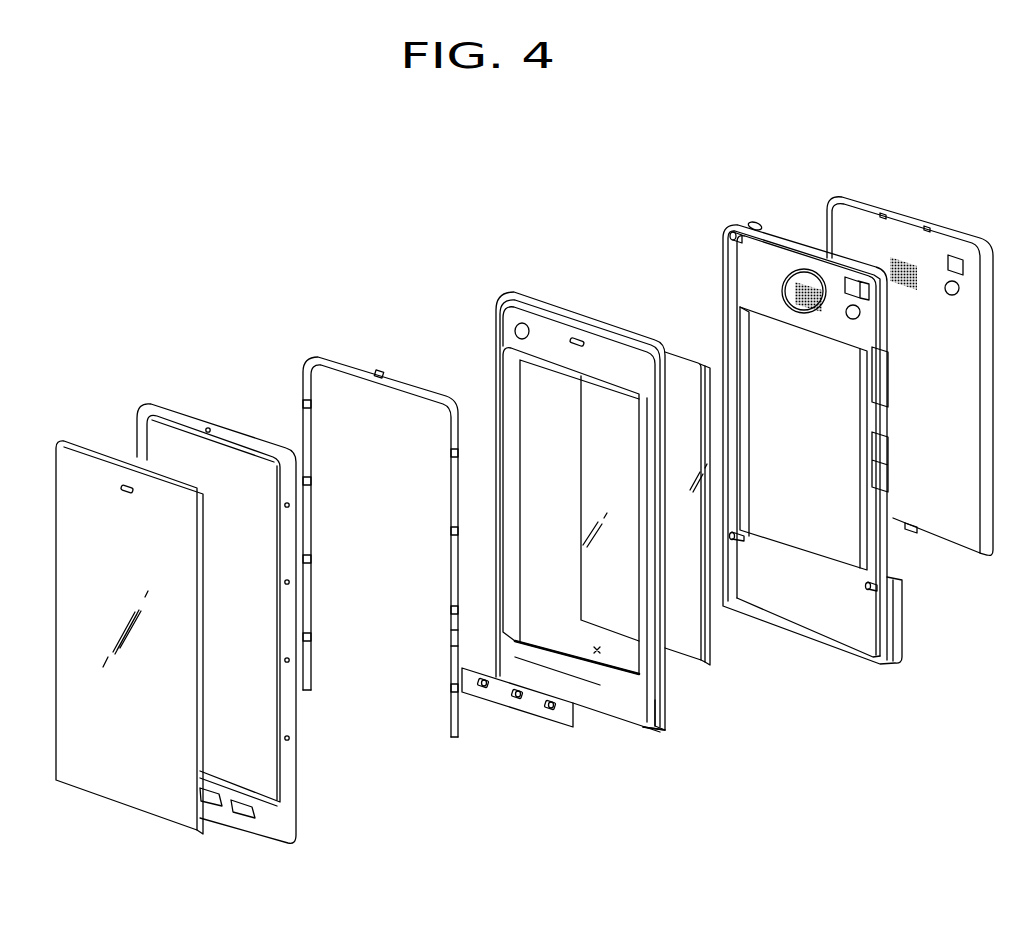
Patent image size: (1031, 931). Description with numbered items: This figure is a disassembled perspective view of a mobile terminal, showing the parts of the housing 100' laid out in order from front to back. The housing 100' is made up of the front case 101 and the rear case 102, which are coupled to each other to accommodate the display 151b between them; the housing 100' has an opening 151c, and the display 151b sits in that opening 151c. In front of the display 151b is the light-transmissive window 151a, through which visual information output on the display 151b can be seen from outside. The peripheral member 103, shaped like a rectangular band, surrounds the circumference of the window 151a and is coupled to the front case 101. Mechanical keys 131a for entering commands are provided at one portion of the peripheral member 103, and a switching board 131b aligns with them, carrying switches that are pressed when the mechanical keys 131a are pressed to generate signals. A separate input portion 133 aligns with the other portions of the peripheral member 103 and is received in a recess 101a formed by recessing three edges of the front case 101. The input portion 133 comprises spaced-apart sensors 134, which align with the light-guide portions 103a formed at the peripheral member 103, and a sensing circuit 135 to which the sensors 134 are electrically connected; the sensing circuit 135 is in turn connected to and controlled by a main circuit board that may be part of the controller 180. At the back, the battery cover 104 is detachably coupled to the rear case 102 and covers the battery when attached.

The housing 100' is at (634, 175).
The window 151a is at (93, 432).
The peripheral member 103 is at (169, 392).
The mechanical keys 131a is at (245, 820).
The light-guide portions 103a is at (289, 741).
The input portion 133 is at (340, 343).
The sensing circuit 135 is at (447, 639).
The sensors 134 is at (450, 689).
The switching board 131b is at (534, 706).
The front case 101 is at (539, 281).
The opening 151c is at (597, 656).
The recess 101a is at (652, 668).
The display 151b is at (694, 341).
The controller 180 is at (708, 604).
The rear case 102 is at (763, 208).
The battery cover 104 is at (861, 178).